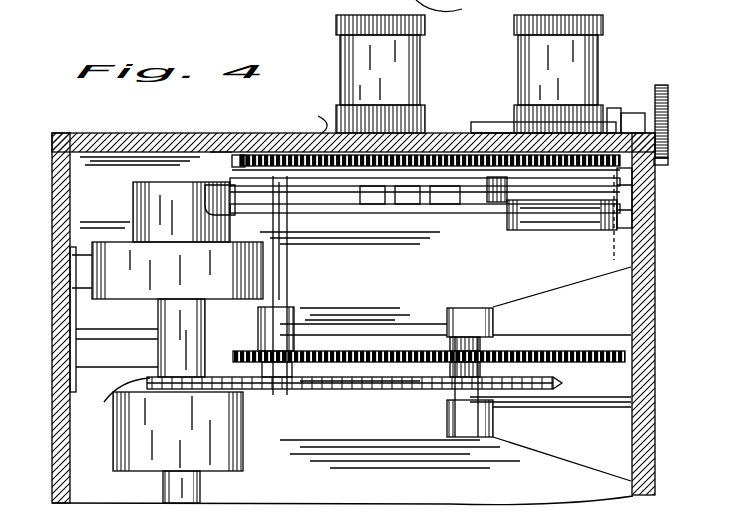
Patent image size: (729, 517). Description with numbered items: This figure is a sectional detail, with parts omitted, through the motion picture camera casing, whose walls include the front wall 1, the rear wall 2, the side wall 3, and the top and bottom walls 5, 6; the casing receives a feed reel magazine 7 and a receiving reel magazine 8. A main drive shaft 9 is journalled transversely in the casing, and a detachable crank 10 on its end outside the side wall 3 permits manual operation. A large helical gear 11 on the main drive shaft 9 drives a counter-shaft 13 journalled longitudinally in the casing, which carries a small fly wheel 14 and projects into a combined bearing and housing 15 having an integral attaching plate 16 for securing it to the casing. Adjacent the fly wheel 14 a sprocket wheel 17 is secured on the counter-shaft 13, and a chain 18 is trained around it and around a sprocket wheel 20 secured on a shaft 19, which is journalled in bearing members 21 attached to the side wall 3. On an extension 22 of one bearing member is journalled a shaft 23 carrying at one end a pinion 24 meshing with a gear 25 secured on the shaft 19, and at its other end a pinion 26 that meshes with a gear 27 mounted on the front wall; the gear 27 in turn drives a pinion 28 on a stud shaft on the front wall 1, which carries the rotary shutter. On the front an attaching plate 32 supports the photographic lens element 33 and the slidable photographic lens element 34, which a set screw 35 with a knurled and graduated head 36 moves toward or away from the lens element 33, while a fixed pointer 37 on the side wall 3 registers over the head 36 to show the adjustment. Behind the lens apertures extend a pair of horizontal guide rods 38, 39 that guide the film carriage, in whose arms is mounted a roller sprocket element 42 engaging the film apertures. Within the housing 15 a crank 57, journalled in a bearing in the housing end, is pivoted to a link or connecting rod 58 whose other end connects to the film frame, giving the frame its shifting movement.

The front wall 1 is at (220, 136).
The rear wall 2 is at (78, 329).
The side wall 3 is at (650, 432).
The top wall 5 is at (145, 387).
The bottom wall 6 is at (150, 269).
The feed reel magazine 7 is at (439, 15).
The receiving reel magazine 8 is at (130, 215).
The main drive shaft 9 is at (568, 178).
The detachable crank 10 is at (615, 135).
The large helical gear 11 is at (635, 170).
The counter-shaft 13 is at (190, 490).
The fly wheel 14 is at (290, 414).
The combined bearing and housing 15 is at (152, 290).
The attaching plate 16 is at (72, 330).
The sprocket wheel 17 is at (116, 395).
The chain 18 is at (358, 389).
The shaft 19 is at (446, 368).
The sprocket wheel 20 is at (555, 386).
The bearing members 21 is at (562, 374).
The extension 22 is at (404, 325).
The shaft 23 is at (289, 294).
The pinion 24 is at (252, 358).
The gear 25 is at (517, 354).
The pinion 26 is at (244, 137).
The gear 27 is at (400, 163).
The pinion 28 is at (472, 166).
The attaching plate 32 is at (310, 114).
The photographic lens element 33 is at (368, 60).
The photographic lens element 34 is at (588, 78).
The set screw 35 is at (630, 118).
The knurled and graduated head 36 is at (668, 118).
The fixed pointer 37 is at (670, 161).
The guide rod 38 is at (414, 196).
The guide rod 39 is at (380, 192).
The roller sprocket element 42 is at (557, 236).
The crank 57 is at (208, 182).
The link or connecting rod 58 is at (443, 165).